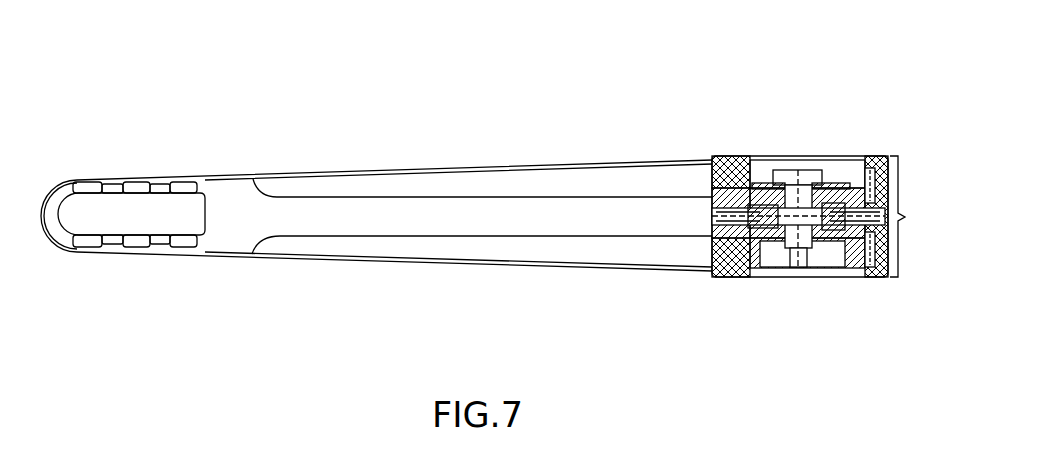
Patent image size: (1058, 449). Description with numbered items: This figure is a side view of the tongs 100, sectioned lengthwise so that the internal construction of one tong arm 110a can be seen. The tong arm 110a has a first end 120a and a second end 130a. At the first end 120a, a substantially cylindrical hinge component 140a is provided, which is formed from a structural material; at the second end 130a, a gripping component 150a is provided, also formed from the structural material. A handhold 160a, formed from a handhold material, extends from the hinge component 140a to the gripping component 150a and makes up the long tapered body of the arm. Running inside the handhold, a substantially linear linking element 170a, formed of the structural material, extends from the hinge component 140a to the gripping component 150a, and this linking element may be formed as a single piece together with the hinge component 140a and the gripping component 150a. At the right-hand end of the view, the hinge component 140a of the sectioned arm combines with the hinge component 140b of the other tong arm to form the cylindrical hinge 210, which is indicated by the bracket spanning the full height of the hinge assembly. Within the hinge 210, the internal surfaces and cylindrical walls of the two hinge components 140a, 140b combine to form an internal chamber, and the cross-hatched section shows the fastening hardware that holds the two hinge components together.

The tongs 100 is at (286, 95).
The tong arm 110a is at (394, 146).
The first end 120a is at (714, 152).
The second end 130a is at (47, 168).
The hinge component 140a is at (868, 168).
The hinge component 140b is at (873, 268).
The gripping component 150a is at (112, 180).
The handhold 160a is at (393, 255).
The linking element 170a is at (330, 225).
The cylindrical hinge 210 is at (925, 216).